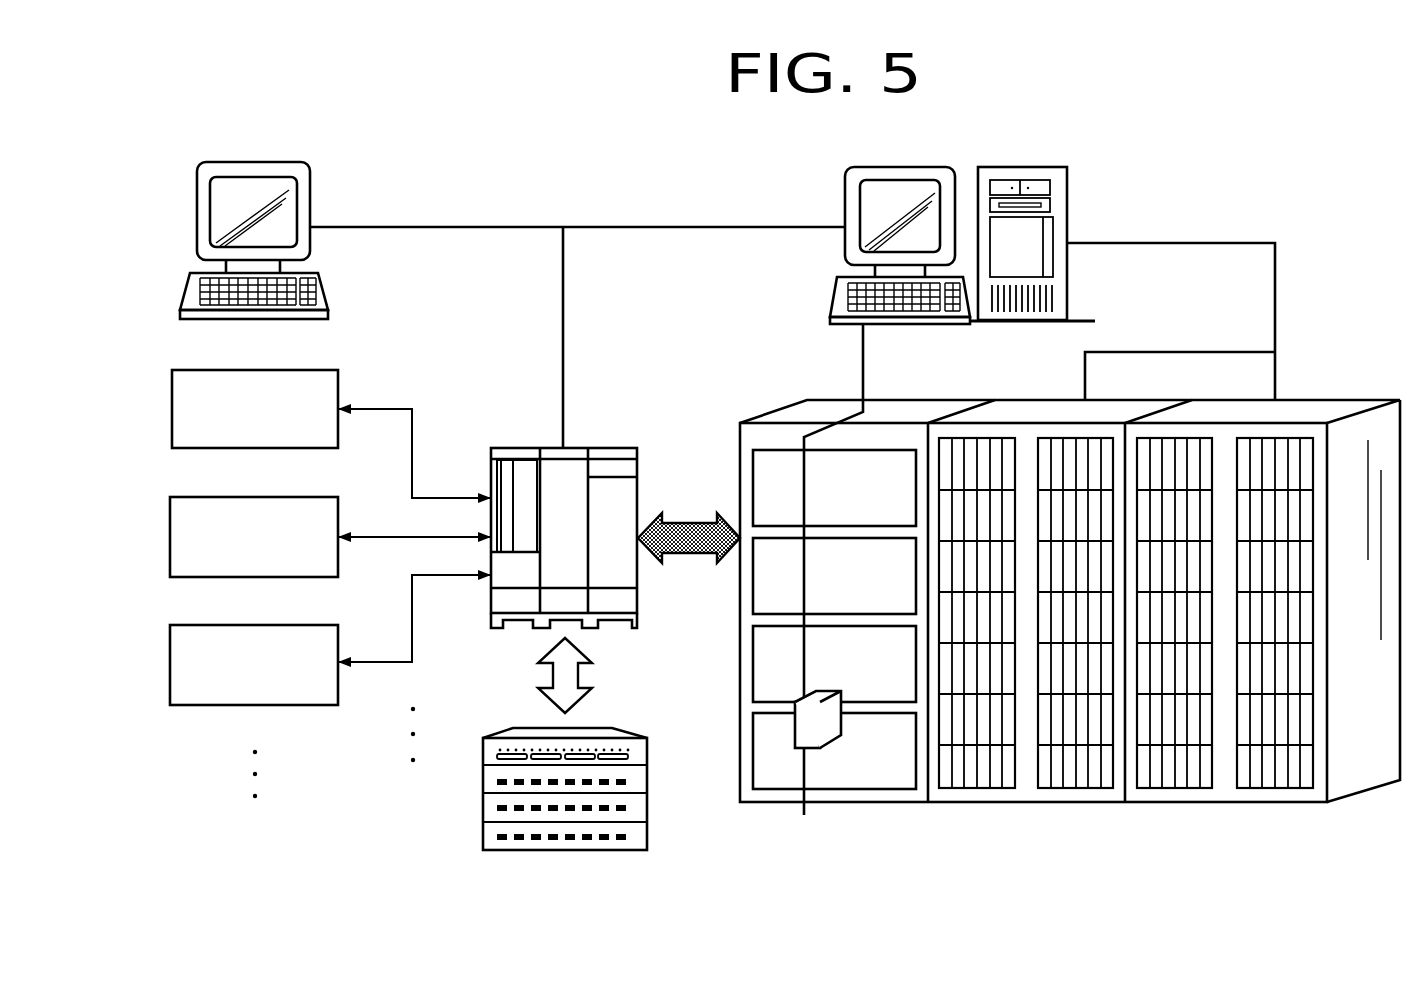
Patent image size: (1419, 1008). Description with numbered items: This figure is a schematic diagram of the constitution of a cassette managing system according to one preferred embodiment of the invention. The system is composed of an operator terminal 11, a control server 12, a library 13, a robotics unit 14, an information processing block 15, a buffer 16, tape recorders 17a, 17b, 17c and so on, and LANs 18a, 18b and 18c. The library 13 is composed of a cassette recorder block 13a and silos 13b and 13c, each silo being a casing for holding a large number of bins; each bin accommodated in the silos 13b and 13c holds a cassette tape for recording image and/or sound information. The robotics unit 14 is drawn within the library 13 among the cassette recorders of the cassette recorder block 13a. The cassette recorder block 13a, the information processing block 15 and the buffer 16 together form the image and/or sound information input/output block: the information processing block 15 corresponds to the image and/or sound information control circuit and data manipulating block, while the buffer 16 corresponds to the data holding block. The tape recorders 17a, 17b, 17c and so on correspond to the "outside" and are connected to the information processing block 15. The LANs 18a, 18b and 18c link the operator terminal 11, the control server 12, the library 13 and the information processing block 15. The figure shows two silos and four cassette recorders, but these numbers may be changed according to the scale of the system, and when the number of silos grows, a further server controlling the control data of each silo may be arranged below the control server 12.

The operator terminal 11 is at (273, 162).
The control server 12 is at (918, 167).
The library 13 is at (1126, 843).
The cassette recorder block 13a is at (838, 803).
The silo 13b is at (1003, 803).
The silo 13c is at (1195, 803).
The robotics unit 14 is at (795, 725).
The information processing block 15 is at (622, 448).
The buffer 16 is at (585, 850).
The tape recorder 17a is at (294, 370).
The tape recorder 17b is at (294, 497).
The tape recorder 17c is at (294, 625).
The LAN 18a is at (1205, 243).
The LAN 18b is at (866, 372).
The LAN 18c is at (515, 227).